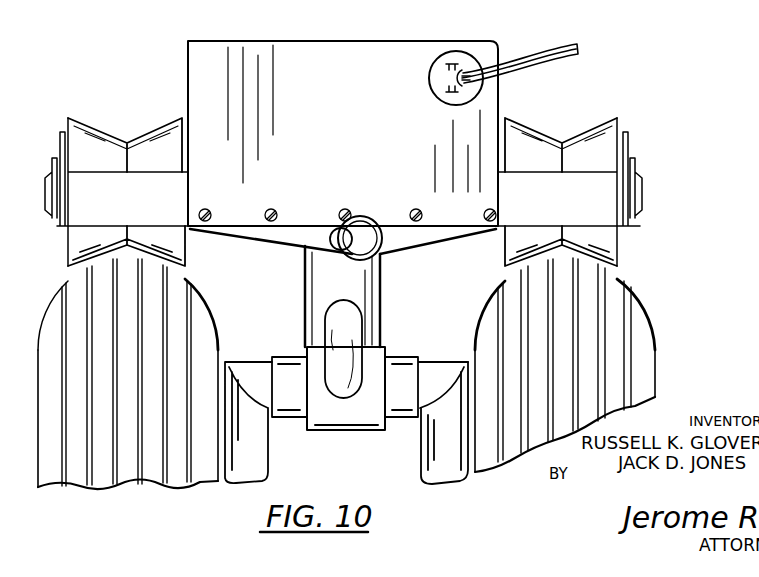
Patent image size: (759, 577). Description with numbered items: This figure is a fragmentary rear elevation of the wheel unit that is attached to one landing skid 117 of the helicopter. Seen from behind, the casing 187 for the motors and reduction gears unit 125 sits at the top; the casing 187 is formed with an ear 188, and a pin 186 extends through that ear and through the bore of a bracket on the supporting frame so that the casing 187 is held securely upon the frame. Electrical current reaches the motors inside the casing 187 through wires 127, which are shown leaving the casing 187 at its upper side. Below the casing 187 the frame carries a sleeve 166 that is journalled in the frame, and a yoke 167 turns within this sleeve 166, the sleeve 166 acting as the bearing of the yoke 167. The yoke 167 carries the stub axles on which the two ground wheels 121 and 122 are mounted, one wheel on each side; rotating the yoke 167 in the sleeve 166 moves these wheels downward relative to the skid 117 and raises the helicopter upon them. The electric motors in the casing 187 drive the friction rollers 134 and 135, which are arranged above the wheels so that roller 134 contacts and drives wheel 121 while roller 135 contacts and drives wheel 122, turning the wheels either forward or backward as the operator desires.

The landing skid 117 is at (336, 278).
The wheel 121 is at (110, 484).
The wheel 122 is at (650, 320).
The motors and reduction gears unit 125 is at (262, 48).
The wires 127 is at (530, 50).
The friction roller 134 is at (150, 140).
The friction roller 135 is at (590, 127).
The sleeve 166 is at (420, 356).
The yoke 167 is at (425, 466).
The pin 186 is at (333, 232).
The casing 187 is at (425, 45).
The ear 188 is at (300, 237).